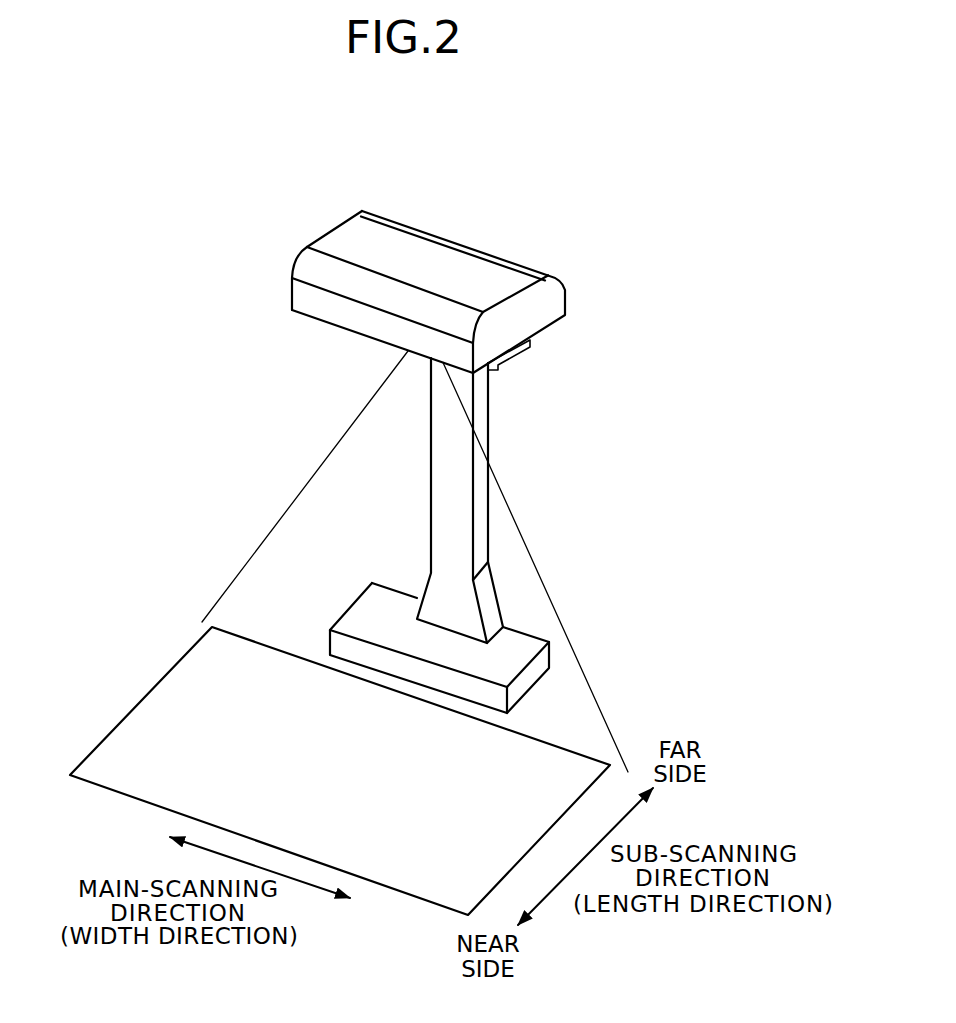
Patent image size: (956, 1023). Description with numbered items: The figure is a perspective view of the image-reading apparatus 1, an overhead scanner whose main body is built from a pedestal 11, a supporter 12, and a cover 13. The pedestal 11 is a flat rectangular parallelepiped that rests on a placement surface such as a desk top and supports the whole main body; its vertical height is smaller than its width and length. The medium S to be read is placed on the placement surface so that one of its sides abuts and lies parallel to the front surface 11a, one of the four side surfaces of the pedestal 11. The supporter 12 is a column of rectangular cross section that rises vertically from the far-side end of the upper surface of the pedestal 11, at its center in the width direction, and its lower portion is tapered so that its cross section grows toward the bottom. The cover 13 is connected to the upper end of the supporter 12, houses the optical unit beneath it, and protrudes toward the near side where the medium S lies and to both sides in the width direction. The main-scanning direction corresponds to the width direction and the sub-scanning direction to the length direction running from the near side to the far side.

The image-reading apparatus 1 is at (333, 186).
The pedestal 11 is at (510, 635).
The front surface 11a is at (476, 680).
The supporter 12 is at (488, 412).
The cover 13 is at (490, 253).
The medium to be read S is at (141, 701).